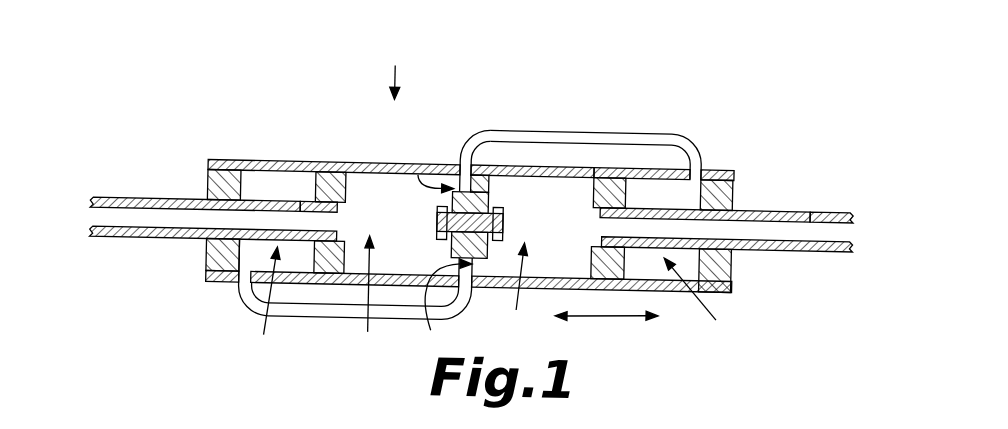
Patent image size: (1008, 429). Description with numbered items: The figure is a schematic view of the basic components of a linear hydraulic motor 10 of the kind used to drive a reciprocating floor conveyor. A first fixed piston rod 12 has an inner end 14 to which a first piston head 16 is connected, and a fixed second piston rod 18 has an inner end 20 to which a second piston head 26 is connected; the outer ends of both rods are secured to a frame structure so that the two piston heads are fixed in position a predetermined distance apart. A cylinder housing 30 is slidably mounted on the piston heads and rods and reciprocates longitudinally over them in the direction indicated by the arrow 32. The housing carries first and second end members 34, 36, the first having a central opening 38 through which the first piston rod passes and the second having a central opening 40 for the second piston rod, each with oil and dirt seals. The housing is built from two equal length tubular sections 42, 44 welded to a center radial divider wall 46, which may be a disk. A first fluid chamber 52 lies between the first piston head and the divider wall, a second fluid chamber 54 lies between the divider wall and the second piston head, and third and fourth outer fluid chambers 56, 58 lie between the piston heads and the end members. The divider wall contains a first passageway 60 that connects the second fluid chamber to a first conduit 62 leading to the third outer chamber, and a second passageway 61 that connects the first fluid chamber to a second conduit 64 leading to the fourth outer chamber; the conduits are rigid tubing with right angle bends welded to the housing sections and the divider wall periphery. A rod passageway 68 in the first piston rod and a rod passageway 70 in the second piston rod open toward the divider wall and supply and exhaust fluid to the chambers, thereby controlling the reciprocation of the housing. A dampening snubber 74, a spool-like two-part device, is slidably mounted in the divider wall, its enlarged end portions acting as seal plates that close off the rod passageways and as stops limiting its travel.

The linear hydraulic motor 10 is at (406, 66).
The first fixed piston rod 12 is at (786, 205).
The inner end of first piston rod 14 is at (640, 176).
The first piston head 16 is at (575, 176).
The second piston rod 18 is at (150, 205).
The inner end of second piston rod 20 is at (330, 165).
The second piston head 26 is at (368, 165).
The cylinder housing 30 is at (455, 165).
The arrow 32 is at (620, 314).
The first end member 34 is at (733, 190).
The second end member 36 is at (206, 181).
The central opening 38 is at (718, 235).
The central opening 40 is at (221, 234).
The first tubular section 42 is at (612, 176).
The second tubular section 44 is at (286, 165).
The center radial divider wall 46 is at (489, 190).
The first fluid chamber 52 is at (513, 296).
The second fluid chamber 54 is at (374, 306).
The third outer fluid chamber 56 is at (711, 296).
The fourth outer fluid chamber 58 is at (270, 310).
The first passageway 60 is at (418, 165).
The second passageway 61 is at (443, 312).
The first conduit 62 is at (530, 129).
The second conduit 64 is at (317, 321).
The rod passageway 68 is at (832, 216).
The rod passageway 70 is at (126, 216).
The snubber 74 is at (504, 221).